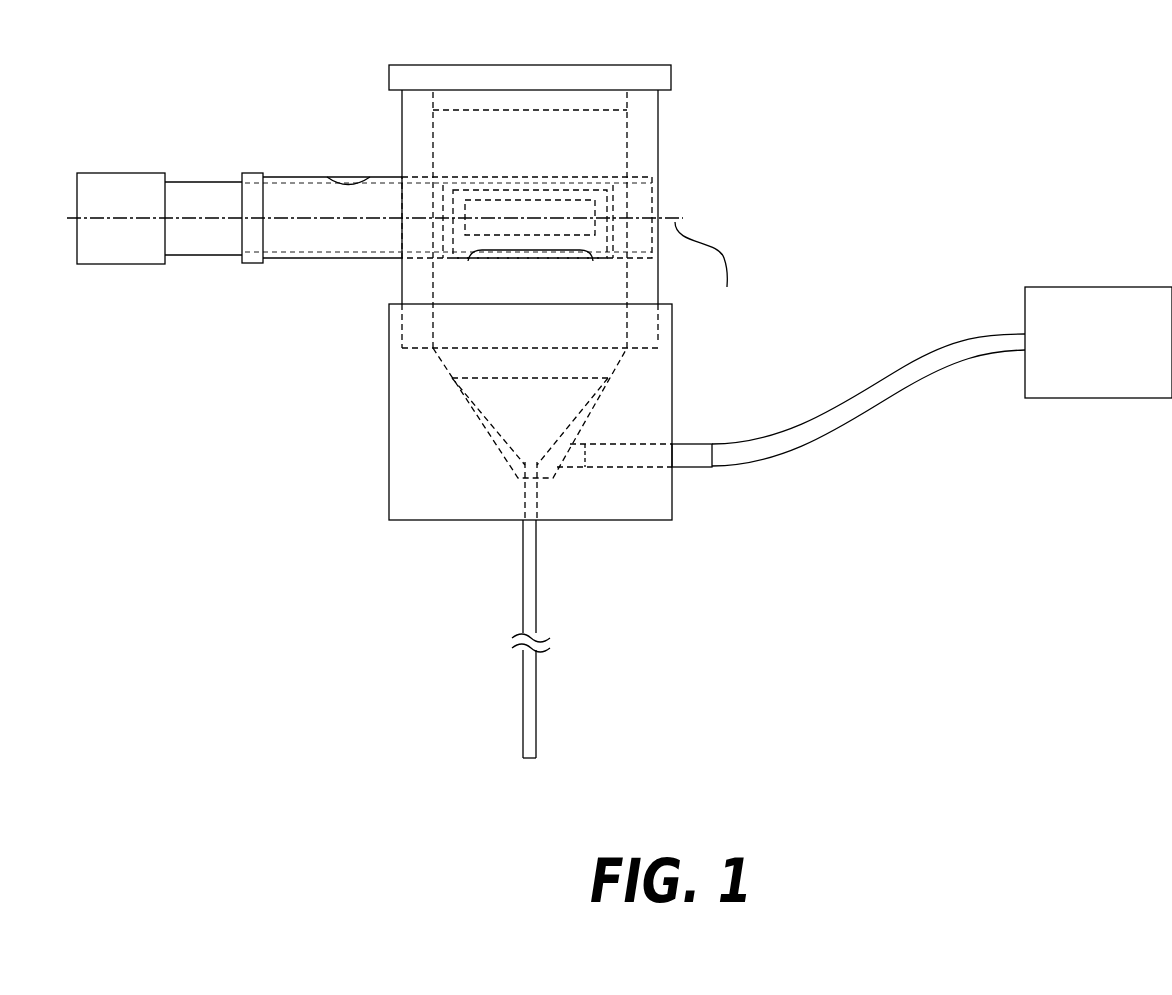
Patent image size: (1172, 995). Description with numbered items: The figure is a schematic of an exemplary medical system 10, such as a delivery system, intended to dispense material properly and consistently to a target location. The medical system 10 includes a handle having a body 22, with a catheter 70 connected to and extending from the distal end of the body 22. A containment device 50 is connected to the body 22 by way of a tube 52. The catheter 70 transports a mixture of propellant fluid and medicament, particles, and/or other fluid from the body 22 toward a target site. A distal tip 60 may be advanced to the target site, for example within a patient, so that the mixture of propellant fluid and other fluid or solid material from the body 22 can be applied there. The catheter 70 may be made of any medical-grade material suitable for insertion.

The medical system 10 is at (878, 69).
The body 22 is at (668, 207).
The containment device 50 is at (1098, 342).
The tube 52 is at (906, 368).
The distal tip 60 is at (555, 724).
The catheter 70 is at (530, 678).